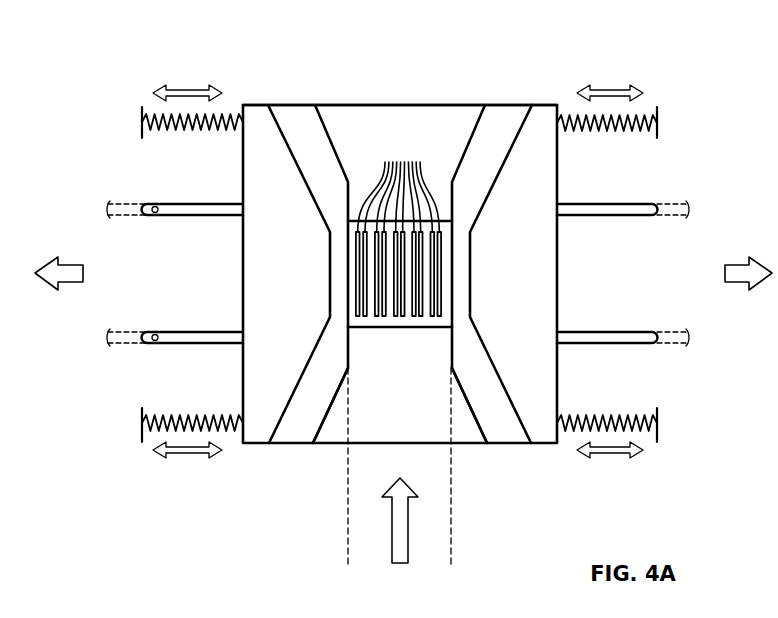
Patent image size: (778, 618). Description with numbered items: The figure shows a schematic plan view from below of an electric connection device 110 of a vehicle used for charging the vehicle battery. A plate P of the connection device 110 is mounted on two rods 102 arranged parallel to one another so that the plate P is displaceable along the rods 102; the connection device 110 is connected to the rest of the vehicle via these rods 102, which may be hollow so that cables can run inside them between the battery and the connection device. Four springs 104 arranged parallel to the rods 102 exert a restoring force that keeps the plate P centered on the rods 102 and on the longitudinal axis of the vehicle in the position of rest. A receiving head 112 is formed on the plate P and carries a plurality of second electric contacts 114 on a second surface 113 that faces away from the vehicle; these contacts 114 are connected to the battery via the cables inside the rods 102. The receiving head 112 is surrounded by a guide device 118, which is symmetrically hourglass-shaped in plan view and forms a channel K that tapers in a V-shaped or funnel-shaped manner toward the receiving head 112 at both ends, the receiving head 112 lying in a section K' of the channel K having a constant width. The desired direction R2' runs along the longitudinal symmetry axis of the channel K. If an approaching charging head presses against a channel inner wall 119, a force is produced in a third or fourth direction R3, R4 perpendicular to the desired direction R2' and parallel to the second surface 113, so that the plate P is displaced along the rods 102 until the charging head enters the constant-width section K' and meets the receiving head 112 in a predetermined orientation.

The electric connection device 110 is at (558, 270).
The channel K is at (400, 83).
The section of the channel with a constant width K' is at (397, 274).
The plate P is at (538, 295).
The rods 102 is at (174, 332).
The spring 104 is at (175, 130).
The receiving head 112 is at (372, 333).
The second surface 113 is at (432, 336).
The second electric contacts 114 is at (399, 184).
The guide device 118 is at (502, 435).
The channel inner wall 119 is at (327, 425).
The desired direction R2' is at (450, 523).
The third direction R3 is at (740, 256).
The fourth direction R4 is at (70, 256).